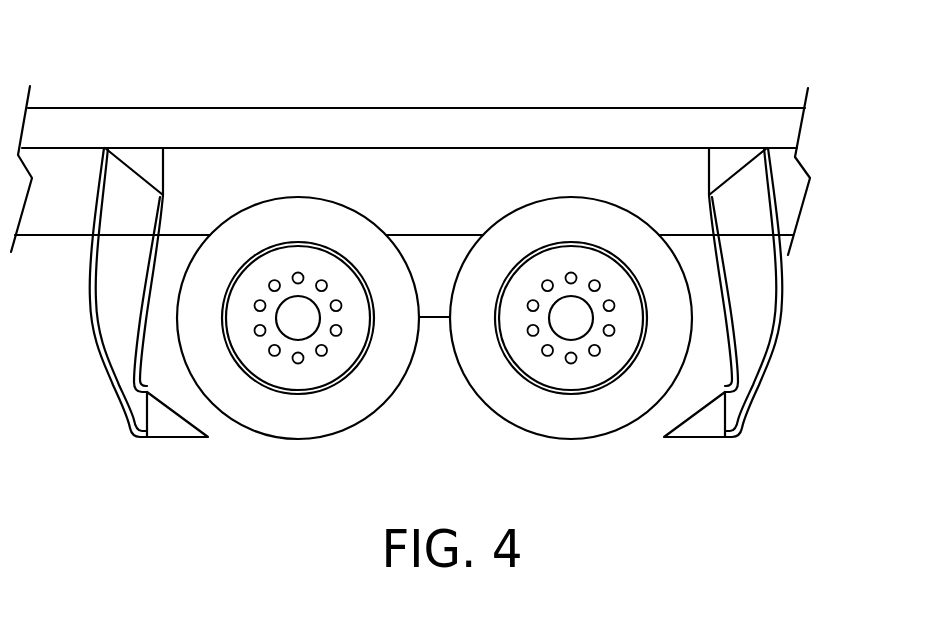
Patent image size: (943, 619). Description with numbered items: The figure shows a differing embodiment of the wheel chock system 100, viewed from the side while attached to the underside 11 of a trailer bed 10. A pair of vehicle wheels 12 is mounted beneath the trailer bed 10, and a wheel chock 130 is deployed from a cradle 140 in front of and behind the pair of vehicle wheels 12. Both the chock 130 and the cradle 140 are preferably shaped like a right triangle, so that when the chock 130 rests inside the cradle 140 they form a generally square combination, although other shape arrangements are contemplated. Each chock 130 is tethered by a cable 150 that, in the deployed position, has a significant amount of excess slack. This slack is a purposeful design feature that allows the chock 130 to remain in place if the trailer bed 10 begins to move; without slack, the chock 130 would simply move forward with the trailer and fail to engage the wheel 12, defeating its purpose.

The trailer bed 10 is at (450, 139).
The underside 11 is at (85, 98).
The vehicle wheels 12 is at (403, 355).
The wheel chock system 100 is at (806, 334).
The wheel chock 130 is at (162, 422).
The cradle 140 is at (145, 163).
The cable 150 is at (725, 300).